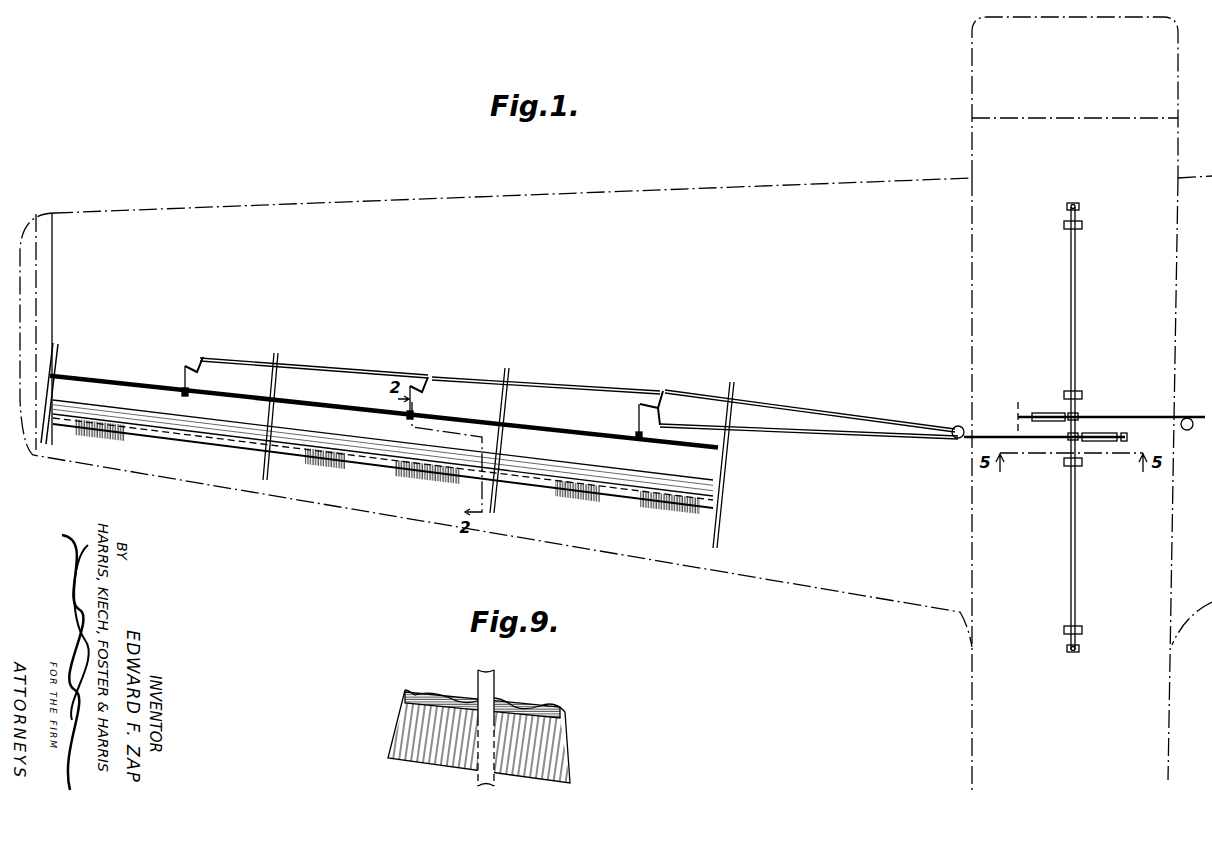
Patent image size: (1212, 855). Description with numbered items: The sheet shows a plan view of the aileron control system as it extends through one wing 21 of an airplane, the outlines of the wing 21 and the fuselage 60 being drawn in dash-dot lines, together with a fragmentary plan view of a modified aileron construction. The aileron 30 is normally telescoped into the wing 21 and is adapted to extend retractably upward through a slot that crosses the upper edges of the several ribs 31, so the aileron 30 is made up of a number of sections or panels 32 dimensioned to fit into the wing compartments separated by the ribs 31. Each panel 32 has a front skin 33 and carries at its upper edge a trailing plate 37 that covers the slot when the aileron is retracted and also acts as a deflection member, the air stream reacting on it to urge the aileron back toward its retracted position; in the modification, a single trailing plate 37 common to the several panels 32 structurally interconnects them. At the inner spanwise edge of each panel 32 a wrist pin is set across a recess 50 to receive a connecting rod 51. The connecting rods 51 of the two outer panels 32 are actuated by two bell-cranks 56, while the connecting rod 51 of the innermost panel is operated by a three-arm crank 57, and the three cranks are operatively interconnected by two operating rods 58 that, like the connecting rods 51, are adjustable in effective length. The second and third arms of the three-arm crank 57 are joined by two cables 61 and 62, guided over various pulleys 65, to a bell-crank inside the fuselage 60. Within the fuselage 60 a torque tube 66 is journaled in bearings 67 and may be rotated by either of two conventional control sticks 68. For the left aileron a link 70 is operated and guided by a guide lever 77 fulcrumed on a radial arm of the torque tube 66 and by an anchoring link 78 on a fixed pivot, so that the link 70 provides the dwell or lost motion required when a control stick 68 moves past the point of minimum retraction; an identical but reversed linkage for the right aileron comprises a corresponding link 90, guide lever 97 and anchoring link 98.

In FIG. 1, the wing 21 is at (755, 585).
In FIG. 1, the aileron 30 is at (316, 472).
In FIG. 1, the ribs 31 is at (276, 352).
In FIG. 9, the ribs 31 is at (478, 676).
In FIG. 1, the panels 32 is at (107, 380).
In FIG. 9, the front skin 33 is at (532, 700).
In FIG. 1, the trailing plate 37 is at (210, 447).
In FIG. 9, the trailing plate 37 is at (428, 750).
In FIG. 1, the recess 50 is at (180, 394).
In FIG. 1, the connecting rods 51 is at (188, 381).
In FIG. 1, the bell-cranks 56 is at (200, 357).
In FIG. 1, the three-arm crank 57 is at (660, 405).
In FIG. 1, the operating rods 58 is at (365, 366).
In FIG. 1, the fuselage 60 is at (970, 700).
In FIG. 1, the cable 61 is at (790, 432).
In FIG. 1, the cable 62 is at (800, 411).
In FIG. 1, the pulleys 65 is at (955, 426).
In FIG. 1, the torque tube 66 is at (1070, 565).
In FIG. 1, the bearings 67 is at (1062, 224).
In FIG. 1, the control sticks 68 is at (1078, 206).
In FIG. 1, the link 70 is at (1042, 441).
In FIG. 1, the guide lever 77 is at (1095, 443).
In FIG. 1, the anchoring link 78 is at (1128, 437).
In FIG. 1, the link 90 is at (1100, 416).
In FIG. 1, the guide lever 97 is at (1052, 412).
In FIG. 1, the anchoring link 98 is at (1018, 403).